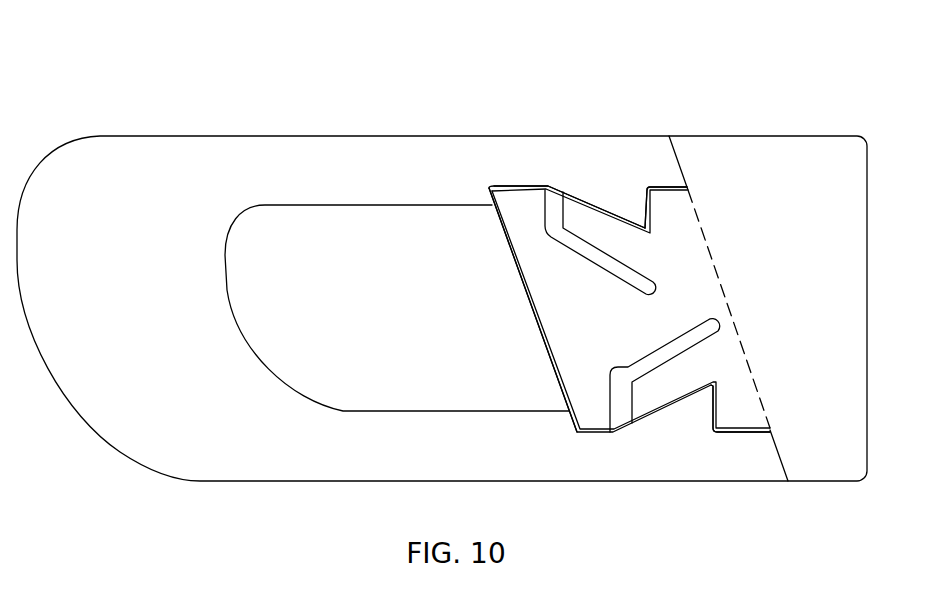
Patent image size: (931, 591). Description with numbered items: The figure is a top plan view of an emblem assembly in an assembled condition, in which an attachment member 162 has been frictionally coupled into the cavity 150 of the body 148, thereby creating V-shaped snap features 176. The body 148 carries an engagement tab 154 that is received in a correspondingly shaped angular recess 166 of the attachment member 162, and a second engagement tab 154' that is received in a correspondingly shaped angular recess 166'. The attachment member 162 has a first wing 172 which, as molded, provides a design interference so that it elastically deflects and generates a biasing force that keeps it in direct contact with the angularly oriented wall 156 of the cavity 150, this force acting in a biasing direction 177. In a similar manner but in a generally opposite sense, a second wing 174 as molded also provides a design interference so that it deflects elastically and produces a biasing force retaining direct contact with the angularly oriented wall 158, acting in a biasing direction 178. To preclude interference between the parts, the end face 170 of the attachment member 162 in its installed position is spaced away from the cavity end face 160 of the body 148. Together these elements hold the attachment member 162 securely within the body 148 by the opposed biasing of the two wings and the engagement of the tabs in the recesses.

The body 148 is at (415, 150).
The cavity 150 is at (550, 186).
The engagement tab 154 is at (663, 152).
The engagement tab 154' is at (744, 468).
The angularly oriented wall 156 is at (578, 181).
The angularly oriented wall 158 is at (641, 437).
The cavity end face 160 is at (559, 350).
The attachment member 162 is at (692, 250).
The angular recess 166 is at (704, 213).
The angular recess 166' is at (778, 398).
The end face 170 is at (501, 251).
The first wing 172 is at (600, 233).
The second wing 174 is at (658, 380).
The V-shaped snap features 176 is at (614, 76).
The biasing direction 177 is at (599, 191).
The biasing direction 178 is at (659, 427).